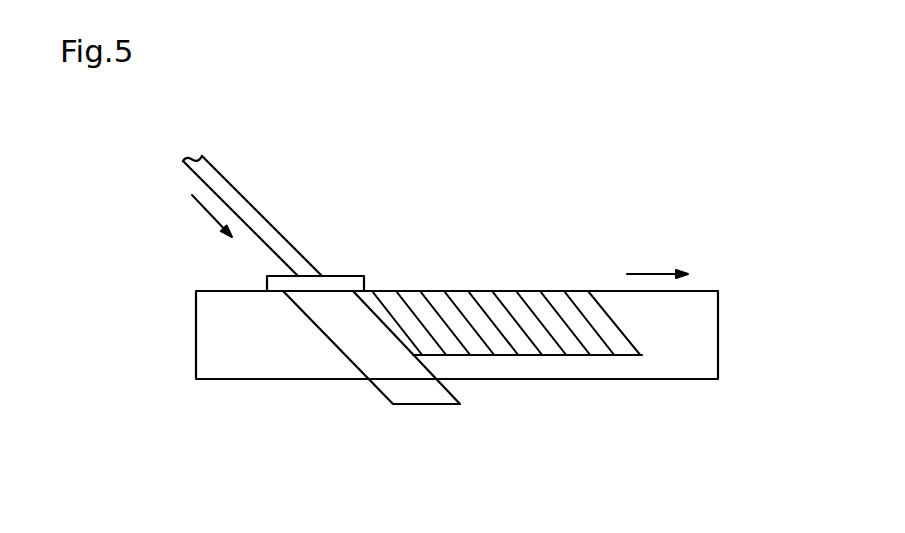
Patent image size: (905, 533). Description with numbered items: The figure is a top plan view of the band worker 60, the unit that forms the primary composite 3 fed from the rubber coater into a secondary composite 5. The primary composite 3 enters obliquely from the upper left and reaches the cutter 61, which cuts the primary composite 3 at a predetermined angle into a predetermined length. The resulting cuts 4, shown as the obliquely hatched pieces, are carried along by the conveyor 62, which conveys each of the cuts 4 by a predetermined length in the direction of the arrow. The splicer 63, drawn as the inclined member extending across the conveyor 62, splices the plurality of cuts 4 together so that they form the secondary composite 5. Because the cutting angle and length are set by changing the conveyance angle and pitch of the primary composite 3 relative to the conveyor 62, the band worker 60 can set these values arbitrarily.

The primary composite 3 is at (217, 182).
The cutter 61 is at (334, 274).
The band worker 60 is at (487, 266).
The cuts 4 is at (525, 308).
The conveyor 62 is at (259, 369).
The splicer 63 is at (424, 398).
The secondary composite 5 is at (546, 360).